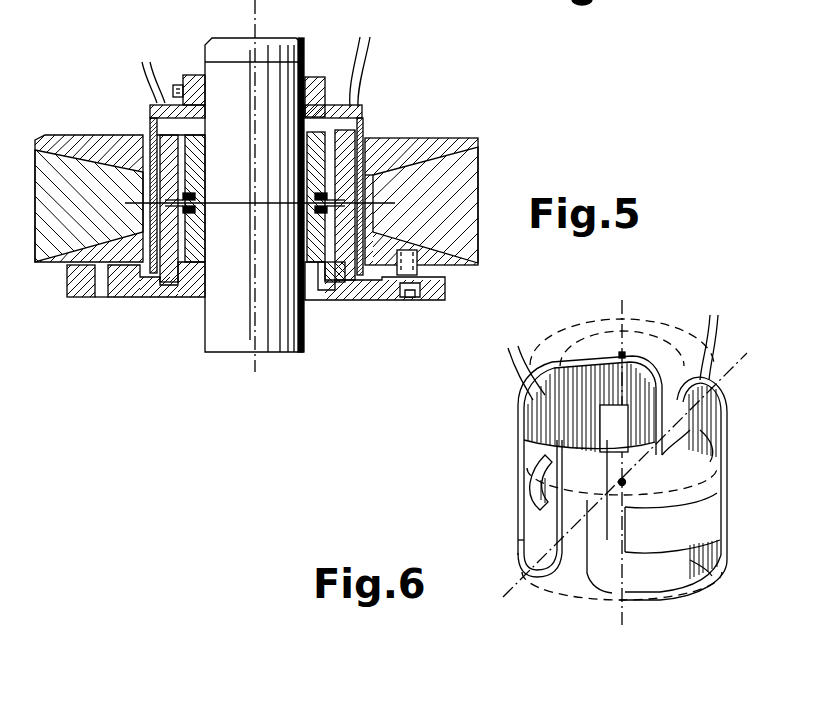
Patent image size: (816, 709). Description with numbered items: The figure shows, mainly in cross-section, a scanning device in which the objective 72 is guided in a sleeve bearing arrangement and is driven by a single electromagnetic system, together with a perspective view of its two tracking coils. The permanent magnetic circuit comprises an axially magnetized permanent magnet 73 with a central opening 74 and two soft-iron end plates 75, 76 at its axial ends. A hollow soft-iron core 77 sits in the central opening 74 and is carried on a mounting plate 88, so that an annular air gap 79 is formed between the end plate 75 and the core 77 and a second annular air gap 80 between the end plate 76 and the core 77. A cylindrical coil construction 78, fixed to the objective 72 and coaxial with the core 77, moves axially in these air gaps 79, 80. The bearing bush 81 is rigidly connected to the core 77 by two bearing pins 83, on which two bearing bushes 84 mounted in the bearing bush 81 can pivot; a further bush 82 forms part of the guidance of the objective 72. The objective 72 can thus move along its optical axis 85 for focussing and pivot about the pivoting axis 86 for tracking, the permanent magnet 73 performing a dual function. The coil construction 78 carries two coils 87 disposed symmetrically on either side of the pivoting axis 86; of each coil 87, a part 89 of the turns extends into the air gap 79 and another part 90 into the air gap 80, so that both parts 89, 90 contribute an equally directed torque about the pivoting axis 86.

In FIG. 5, the objective 72 is at (232, 80).
In FIG. 5, the permanent magnet 73 is at (466, 168).
In FIG. 5, the central opening 74 is at (374, 174).
In FIG. 5, the soft-iron end plate 75 is at (418, 140).
In FIG. 5, the soft-iron end plate 76 is at (452, 264).
In FIG. 5, the hollow soft-iron core 77 is at (347, 270).
In FIG. 5, the cylindrical coil construction 78 is at (180, 103).
In FIG. 6, the cylindrical coil construction 78 is at (715, 367).
In FIG. 5, the annular air gap 79 is at (152, 130).
In FIG. 5, the second annular air gap 80 is at (132, 264).
In FIG. 5, the bearing bush 81 is at (320, 262).
In FIG. 5, the spacer block 82 is at (342, 270).
In FIG. 5, the bearing pin 83 is at (170, 284).
In FIG. 5, the bearing bush 84 is at (198, 206).
In FIG. 5, the optical axis 85 is at (257, 13).
In FIG. 5, the pivoting axis 86 is at (227, 202).
In FIG. 6, the pivoting axis 86 is at (517, 583).
In FIG. 6, the coil 87 is at (518, 412).
In FIG. 5, the mounting plate 88 is at (75, 282).
In FIG. 6, the part of the turns 89 is at (522, 455).
In FIG. 6, the other part of the turns 90 is at (522, 540).